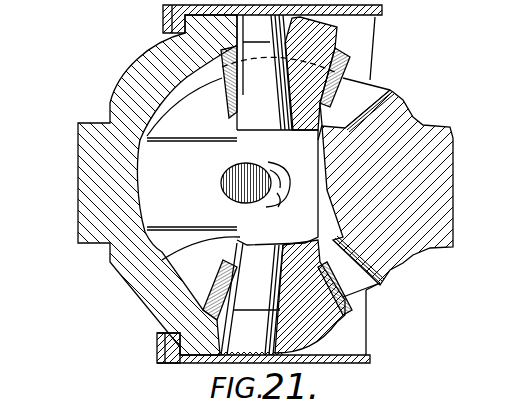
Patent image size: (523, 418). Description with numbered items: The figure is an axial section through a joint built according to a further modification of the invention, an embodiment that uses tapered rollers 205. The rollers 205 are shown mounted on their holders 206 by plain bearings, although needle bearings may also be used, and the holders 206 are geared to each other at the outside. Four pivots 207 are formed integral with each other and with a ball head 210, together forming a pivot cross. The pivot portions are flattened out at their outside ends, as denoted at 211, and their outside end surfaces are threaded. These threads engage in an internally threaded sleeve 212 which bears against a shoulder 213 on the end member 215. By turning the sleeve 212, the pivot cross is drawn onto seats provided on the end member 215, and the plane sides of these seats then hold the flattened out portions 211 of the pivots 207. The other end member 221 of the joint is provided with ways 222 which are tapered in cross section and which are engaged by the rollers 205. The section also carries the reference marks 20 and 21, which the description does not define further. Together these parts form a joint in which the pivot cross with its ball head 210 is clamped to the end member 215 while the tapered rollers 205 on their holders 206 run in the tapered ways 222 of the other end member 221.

The top plate 20 is at (340, 37).
The stem 21 is at (247, 40).
The tapered rollers 205 is at (378, 282).
The holders 206 is at (376, 28).
The pivots 207 is at (262, 113).
The ball head 210 is at (291, 185).
The flattened out portions 211 is at (258, 165).
The internally threaded sleeve 212 is at (330, 362).
The shoulder 213 is at (170, 348).
The end member 215 is at (141, 78).
The other end member 221 is at (405, 128).
The ways 222 is at (378, 283).